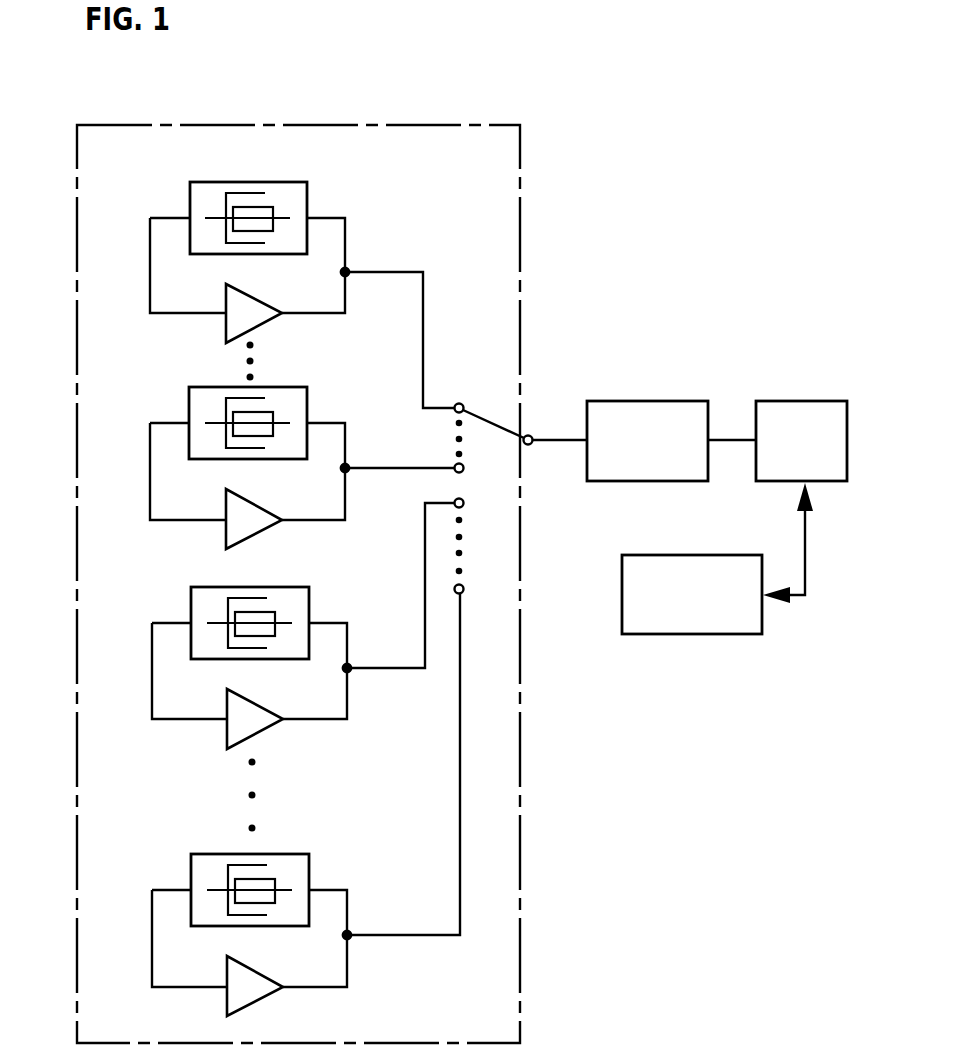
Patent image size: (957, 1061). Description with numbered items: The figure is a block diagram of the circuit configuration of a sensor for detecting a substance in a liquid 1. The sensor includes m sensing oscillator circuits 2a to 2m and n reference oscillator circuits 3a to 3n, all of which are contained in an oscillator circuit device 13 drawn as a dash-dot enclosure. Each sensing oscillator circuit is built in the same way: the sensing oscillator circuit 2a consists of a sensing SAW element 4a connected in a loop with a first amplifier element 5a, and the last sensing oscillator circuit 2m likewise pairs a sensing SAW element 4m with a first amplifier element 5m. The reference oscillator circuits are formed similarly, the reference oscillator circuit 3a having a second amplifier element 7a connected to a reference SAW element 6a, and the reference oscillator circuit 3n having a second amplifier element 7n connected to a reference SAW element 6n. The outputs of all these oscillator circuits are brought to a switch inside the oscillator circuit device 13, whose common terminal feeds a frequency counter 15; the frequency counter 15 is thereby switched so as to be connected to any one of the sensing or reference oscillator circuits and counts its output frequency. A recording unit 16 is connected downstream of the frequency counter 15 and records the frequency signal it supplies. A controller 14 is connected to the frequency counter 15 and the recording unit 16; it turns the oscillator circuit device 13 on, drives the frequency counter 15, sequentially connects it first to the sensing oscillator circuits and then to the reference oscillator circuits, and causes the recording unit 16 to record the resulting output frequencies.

The sensor for detecting a substance in a liquid 1 is at (170, 98).
The sensing oscillator circuit 2a is at (281, 277).
The sensing oscillator circuit 2m is at (279, 451).
The reference oscillator circuit 3a is at (283, 626).
The reference oscillator circuit 3n is at (282, 809).
The sensing SAW element 4a is at (262, 182).
The sensing SAW element 4m is at (268, 387).
The first amplifier element 5a is at (248, 291).
The first amplifier element 5m is at (248, 498).
The reference SAW element 6a is at (270, 587).
The reference SAW element 6n is at (277, 854).
The second amplifier element 7a is at (247, 697).
The second amplifier element 7n is at (260, 1002).
The oscillator circuit device 13 is at (526, 120).
The controller 14 is at (682, 635).
The frequency counter 15 is at (652, 400).
The recording unit 16 is at (797, 400).